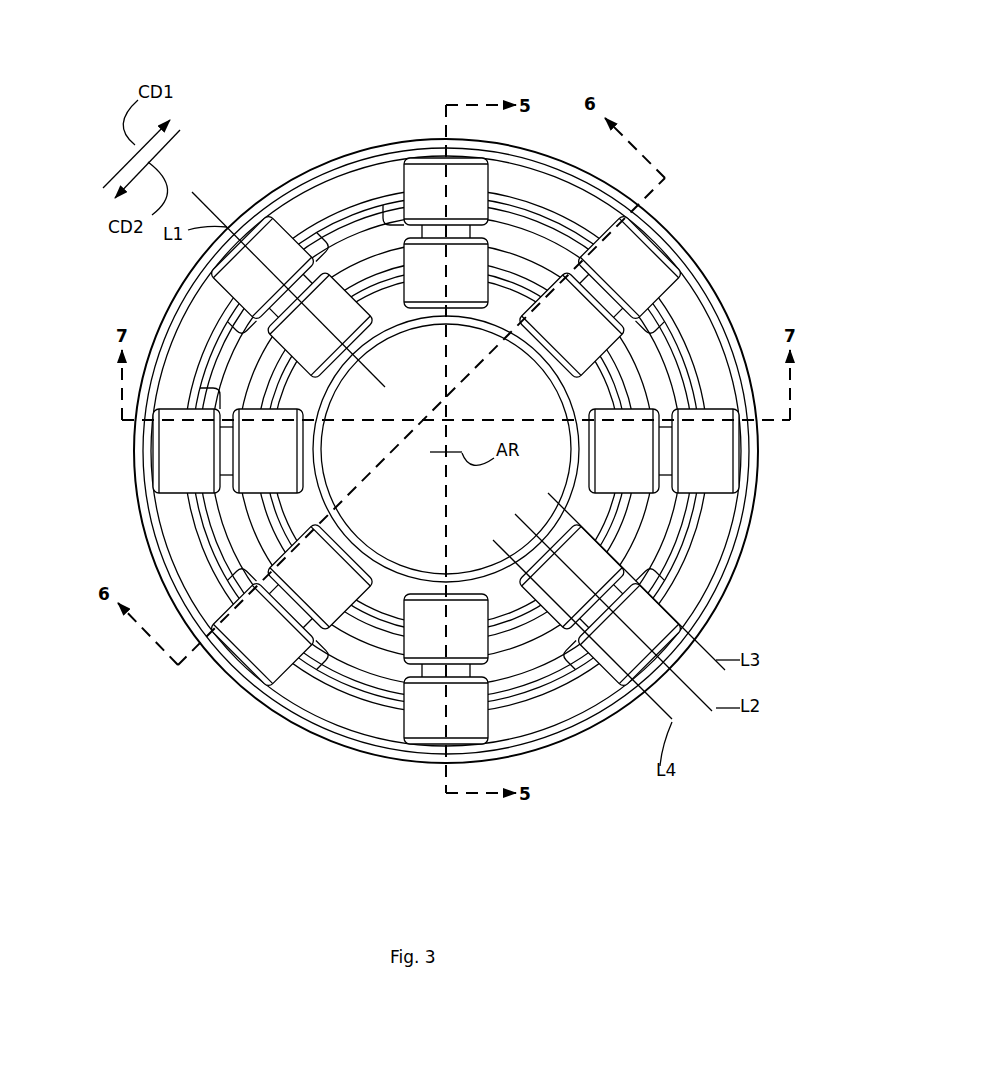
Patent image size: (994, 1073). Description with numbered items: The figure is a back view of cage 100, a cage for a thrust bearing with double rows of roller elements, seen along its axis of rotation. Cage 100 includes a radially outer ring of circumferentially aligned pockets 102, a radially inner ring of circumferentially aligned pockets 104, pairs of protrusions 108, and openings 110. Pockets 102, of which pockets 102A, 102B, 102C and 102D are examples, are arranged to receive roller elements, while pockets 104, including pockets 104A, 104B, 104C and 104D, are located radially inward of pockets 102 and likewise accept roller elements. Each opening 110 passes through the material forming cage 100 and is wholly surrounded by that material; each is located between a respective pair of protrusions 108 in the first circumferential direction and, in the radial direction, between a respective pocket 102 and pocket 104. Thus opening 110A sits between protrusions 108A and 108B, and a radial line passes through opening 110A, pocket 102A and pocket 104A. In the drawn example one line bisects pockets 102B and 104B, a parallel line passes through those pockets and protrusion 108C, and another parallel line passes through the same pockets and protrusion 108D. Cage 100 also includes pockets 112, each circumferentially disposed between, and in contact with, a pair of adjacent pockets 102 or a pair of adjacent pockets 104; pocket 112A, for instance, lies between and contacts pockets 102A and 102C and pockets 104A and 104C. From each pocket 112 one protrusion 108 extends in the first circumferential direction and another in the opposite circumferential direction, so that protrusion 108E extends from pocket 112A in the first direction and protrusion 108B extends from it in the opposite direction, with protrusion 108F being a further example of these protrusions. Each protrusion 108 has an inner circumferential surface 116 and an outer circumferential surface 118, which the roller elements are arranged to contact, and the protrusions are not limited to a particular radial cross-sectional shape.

The cage 100 is at (707, 76).
The circumferentially aligned pockets 102 is at (250, 620).
The pocket 102A is at (272, 217).
The pocket 102B is at (652, 612).
The pocket 102C is at (430, 180).
The pocket 102D is at (190, 450).
The circumferentially aligned pockets 104 is at (352, 642).
The pocket 104A is at (300, 343).
The pocket 104B is at (608, 546).
The pocket 104C is at (423, 310).
The pocket 104D is at (270, 485).
The protrusions 108 is at (668, 303).
The protrusion 108A is at (255, 318).
The protrusion 108B is at (303, 277).
The protrusion 108C is at (622, 585).
The protrusion 108D is at (598, 668).
The protrusion 108E is at (400, 232).
The protrusion 108F is at (222, 410).
The openings 110 is at (310, 650).
The opening 110A is at (273, 255).
The pockets 112 is at (378, 660).
The pocket 112A is at (345, 240).
The inner circumferential surface 116 is at (590, 355).
The outer circumferential surface 118 is at (612, 290).